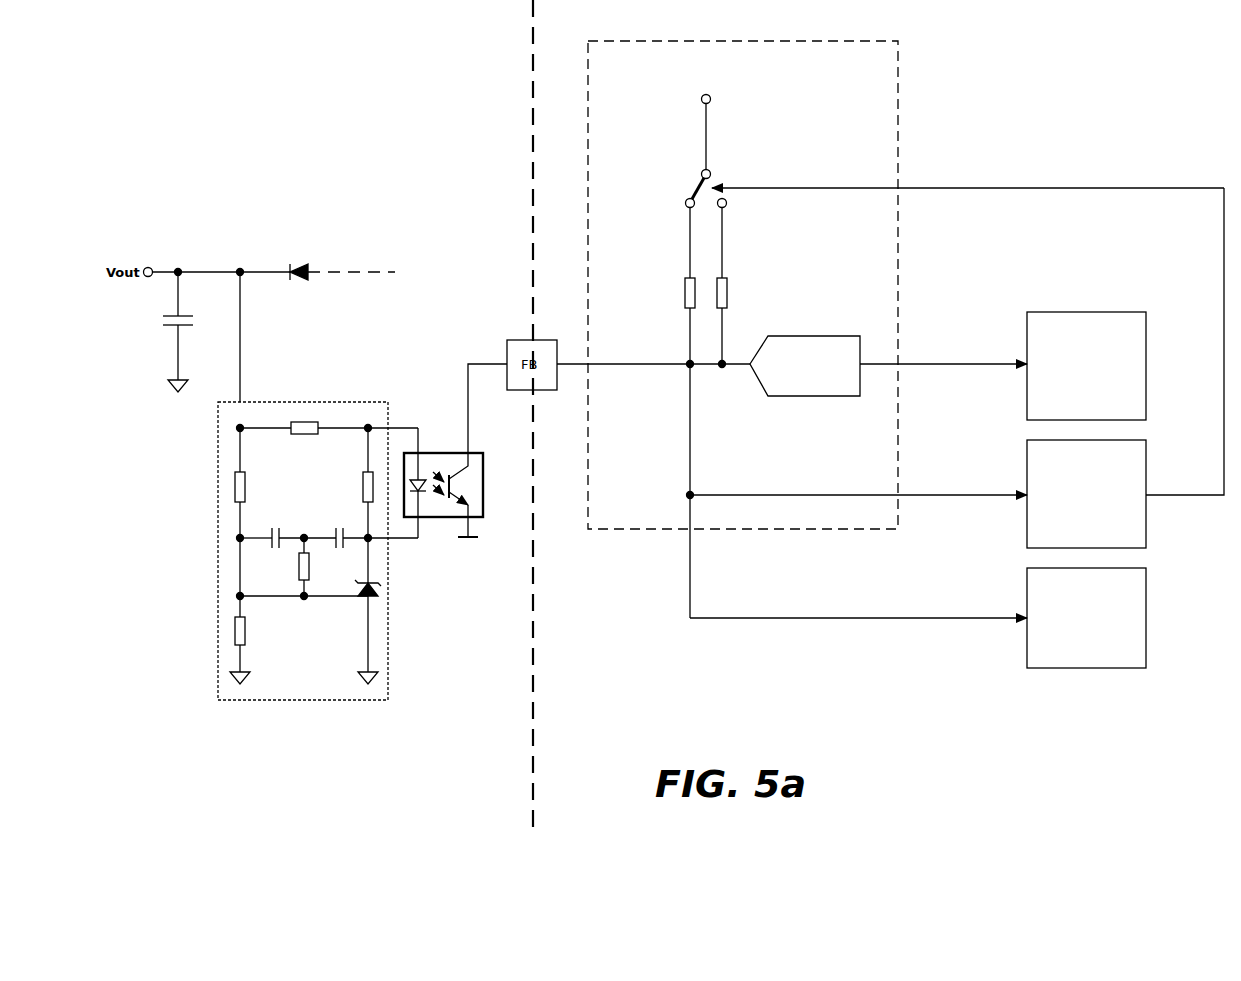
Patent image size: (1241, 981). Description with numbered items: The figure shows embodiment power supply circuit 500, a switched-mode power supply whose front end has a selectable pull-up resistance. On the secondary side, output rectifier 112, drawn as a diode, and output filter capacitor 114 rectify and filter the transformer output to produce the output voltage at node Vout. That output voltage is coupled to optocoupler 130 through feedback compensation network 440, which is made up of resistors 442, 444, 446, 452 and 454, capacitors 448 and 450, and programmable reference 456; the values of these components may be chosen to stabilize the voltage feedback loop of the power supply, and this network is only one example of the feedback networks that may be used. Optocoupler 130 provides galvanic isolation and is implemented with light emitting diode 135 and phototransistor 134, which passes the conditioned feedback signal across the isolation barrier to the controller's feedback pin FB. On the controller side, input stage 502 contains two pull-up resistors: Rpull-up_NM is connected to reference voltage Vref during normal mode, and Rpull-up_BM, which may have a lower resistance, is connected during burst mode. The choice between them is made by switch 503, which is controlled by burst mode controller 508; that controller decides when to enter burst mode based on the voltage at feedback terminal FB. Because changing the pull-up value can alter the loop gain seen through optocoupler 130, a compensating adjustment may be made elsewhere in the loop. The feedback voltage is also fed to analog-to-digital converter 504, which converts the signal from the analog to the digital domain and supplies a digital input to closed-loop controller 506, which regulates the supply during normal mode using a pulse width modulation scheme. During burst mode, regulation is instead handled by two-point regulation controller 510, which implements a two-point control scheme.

The power supply circuit 500 is at (266, 68).
The output rectifier 112 is at (300, 262).
The output filter capacitor 114 is at (163, 317).
The feedback compensation network 440 is at (352, 400).
The resistor 442 is at (306, 421).
The resistor 444 is at (362, 488).
The resistor 446 is at (246, 486).
The capacitor 448 is at (338, 530).
The capacitor 450 is at (277, 530).
The resistor 452 is at (302, 566).
The resistor 454 is at (246, 637).
The programmable reference 456 is at (365, 602).
The optocoupler 130 is at (428, 453).
The phototransistor 134 is at (470, 490).
The light emitting diode 135 is at (421, 495).
The input stage 502 is at (768, 42).
The switch 503 is at (698, 184).
The analog-to-digital converter 504 is at (802, 336).
The closed-loop controller 506 is at (1052, 311).
The burst mode controller 508 is at (1026, 468).
The two-point regulation controller 510 is at (1026, 590).